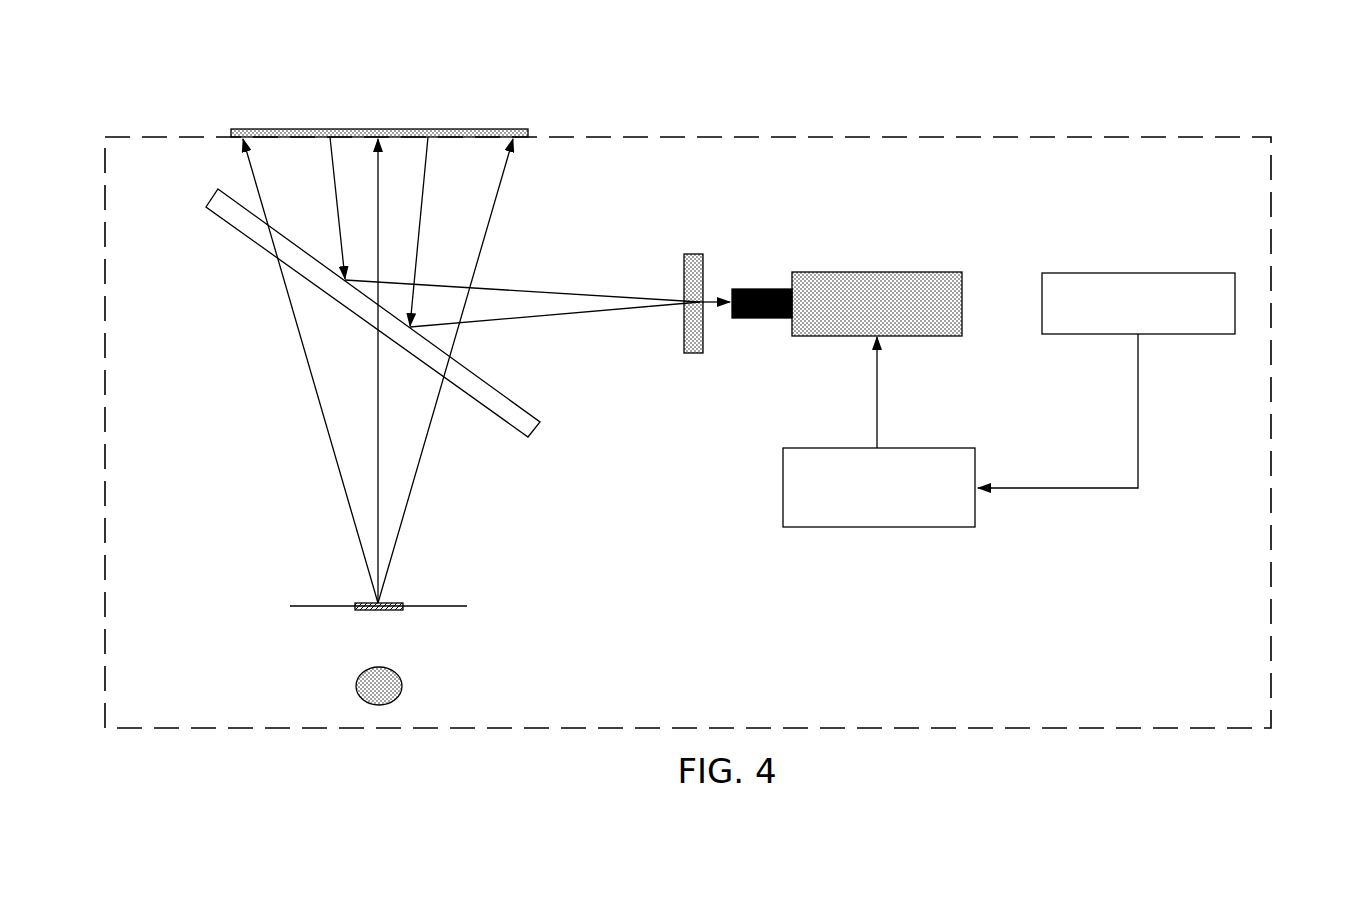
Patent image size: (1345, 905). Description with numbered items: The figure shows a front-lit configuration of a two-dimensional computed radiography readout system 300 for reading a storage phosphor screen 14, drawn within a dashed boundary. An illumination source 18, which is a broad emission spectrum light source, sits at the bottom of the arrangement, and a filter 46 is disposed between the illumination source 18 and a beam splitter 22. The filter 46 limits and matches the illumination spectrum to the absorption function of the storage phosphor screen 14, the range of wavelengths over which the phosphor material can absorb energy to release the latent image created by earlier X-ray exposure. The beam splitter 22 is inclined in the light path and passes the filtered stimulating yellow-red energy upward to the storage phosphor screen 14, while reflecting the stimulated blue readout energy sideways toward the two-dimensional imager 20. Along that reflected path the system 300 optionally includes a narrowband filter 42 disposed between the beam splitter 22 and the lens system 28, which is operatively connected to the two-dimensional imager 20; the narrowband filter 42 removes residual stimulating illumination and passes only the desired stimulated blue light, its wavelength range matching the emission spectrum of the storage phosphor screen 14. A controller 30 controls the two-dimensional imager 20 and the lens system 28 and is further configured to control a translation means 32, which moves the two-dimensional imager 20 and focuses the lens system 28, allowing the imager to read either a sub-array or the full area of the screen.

The two-dimensional CR readout system 300 is at (1222, 135).
The storage phosphor screen 14 is at (520, 129).
The beam splitter 22 is at (537, 428).
The filter 46 is at (370, 613).
The illumination source 18 is at (403, 684).
The narrowband filter 42 is at (703, 276).
The lens system 28 is at (766, 319).
The 2D imager 20 is at (900, 276).
The controller 30 is at (1137, 272).
The translation means 32 is at (880, 528).